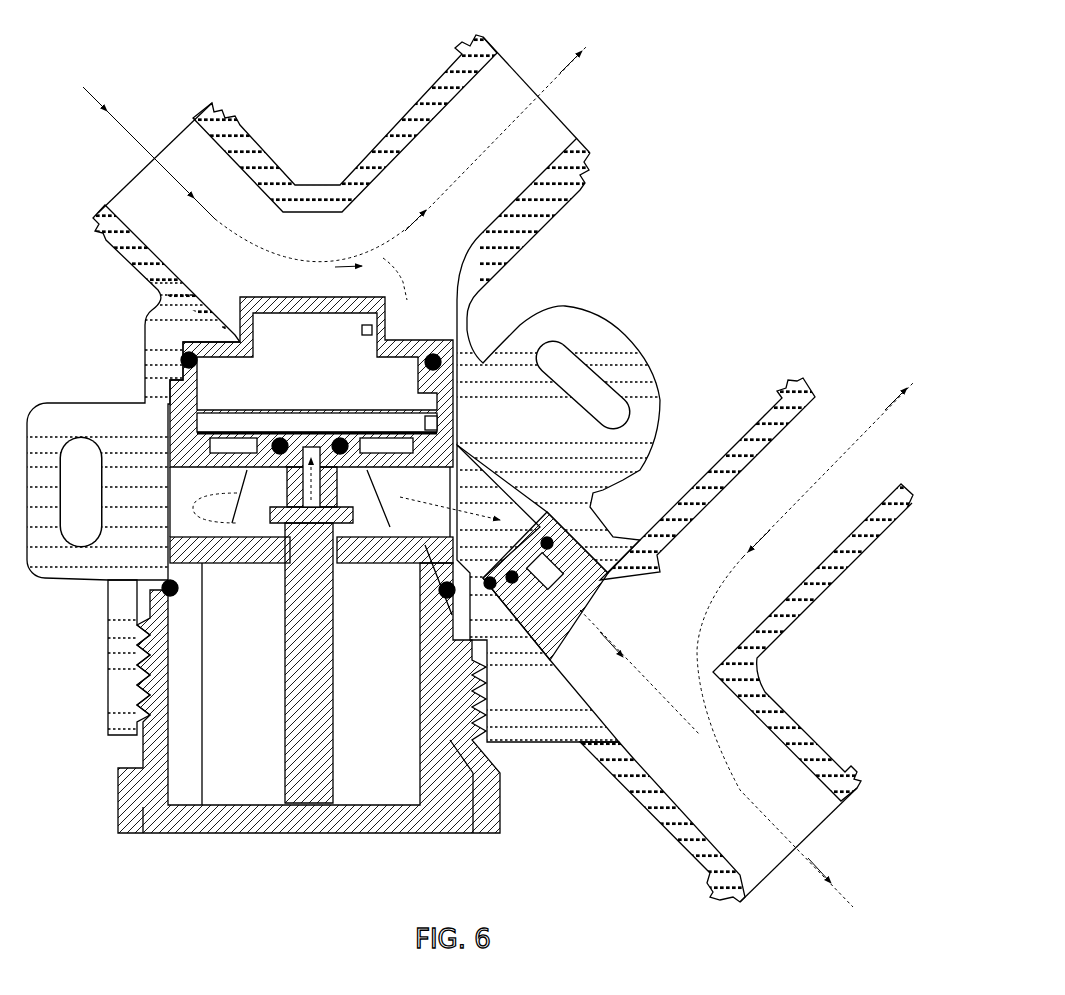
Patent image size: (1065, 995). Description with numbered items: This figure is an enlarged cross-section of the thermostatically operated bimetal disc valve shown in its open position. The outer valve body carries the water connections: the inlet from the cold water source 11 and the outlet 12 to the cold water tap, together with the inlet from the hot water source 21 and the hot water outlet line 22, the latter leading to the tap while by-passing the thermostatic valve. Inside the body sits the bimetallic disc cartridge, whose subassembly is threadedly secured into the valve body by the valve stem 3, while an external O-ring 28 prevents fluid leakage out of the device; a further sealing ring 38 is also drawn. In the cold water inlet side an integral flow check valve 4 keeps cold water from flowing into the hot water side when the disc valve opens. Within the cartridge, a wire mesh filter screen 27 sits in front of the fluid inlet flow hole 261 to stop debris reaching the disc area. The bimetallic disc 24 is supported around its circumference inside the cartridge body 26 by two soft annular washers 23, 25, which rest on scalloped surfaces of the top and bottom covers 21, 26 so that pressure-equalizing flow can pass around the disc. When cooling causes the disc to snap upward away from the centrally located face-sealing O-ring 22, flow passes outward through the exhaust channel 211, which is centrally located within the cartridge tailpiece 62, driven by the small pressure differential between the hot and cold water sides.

The cartridge tailpiece 21 is at (225, 103).
The central O-ring 22 is at (580, 165).
The annular washer 23 is at (445, 437).
The bimetallic disc 24 is at (300, 427).
The annular washer 25 is at (432, 423).
The cartridge body 26 is at (364, 384).
The wire mesh filter screen 27 is at (387, 313).
The external O-ring 28 is at (447, 350).
The fluid inlet flow hole 261 is at (367, 332).
The sealing ring 38 is at (167, 594).
The cartridge tailpiece 62 is at (287, 512).
The exhaust channel 211 is at (311, 512).
The valve stem 3 is at (141, 838).
The flow check valve 4 is at (600, 597).
The cold water inlet 11 is at (848, 763).
The cold water outlet 12 is at (908, 514).